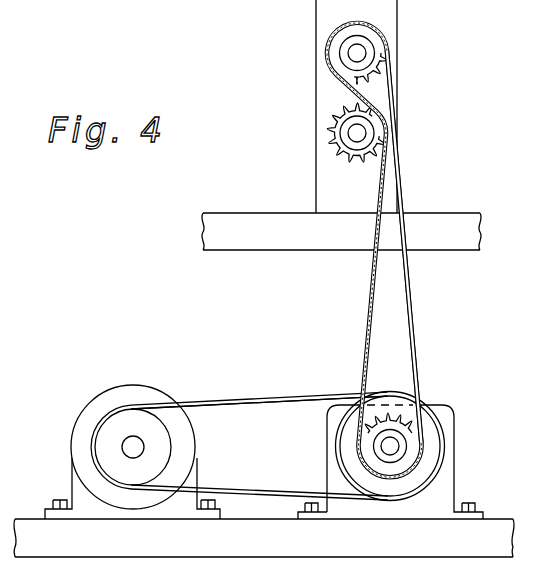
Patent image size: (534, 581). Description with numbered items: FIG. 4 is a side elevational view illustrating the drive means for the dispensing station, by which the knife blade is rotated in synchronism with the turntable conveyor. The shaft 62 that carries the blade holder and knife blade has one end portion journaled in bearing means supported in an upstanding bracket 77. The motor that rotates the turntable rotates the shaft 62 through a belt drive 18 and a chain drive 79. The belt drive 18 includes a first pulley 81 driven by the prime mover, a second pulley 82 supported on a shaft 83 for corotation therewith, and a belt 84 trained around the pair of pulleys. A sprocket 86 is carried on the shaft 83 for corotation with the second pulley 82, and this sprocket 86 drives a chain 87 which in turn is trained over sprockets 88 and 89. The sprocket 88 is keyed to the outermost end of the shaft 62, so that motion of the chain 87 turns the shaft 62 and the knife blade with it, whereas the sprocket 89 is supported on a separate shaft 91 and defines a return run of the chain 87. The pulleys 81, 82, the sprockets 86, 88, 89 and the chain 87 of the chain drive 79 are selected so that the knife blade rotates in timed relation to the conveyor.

The upstanding bracket 77 is at (390, 17).
The shaft 62 is at (356, 53).
The sprocket 88 is at (338, 62).
The sprocket 89 is at (332, 130).
The separate shaft 91 is at (355, 140).
The chain drive 79 is at (411, 317).
The chain 87 is at (417, 355).
The belt 84 is at (210, 400).
The belt drive 18 is at (272, 395).
The first pulley 81 is at (113, 431).
The shaft 83 is at (399, 446).
The sprocket 86 is at (375, 458).
The second pulley 82 is at (397, 490).